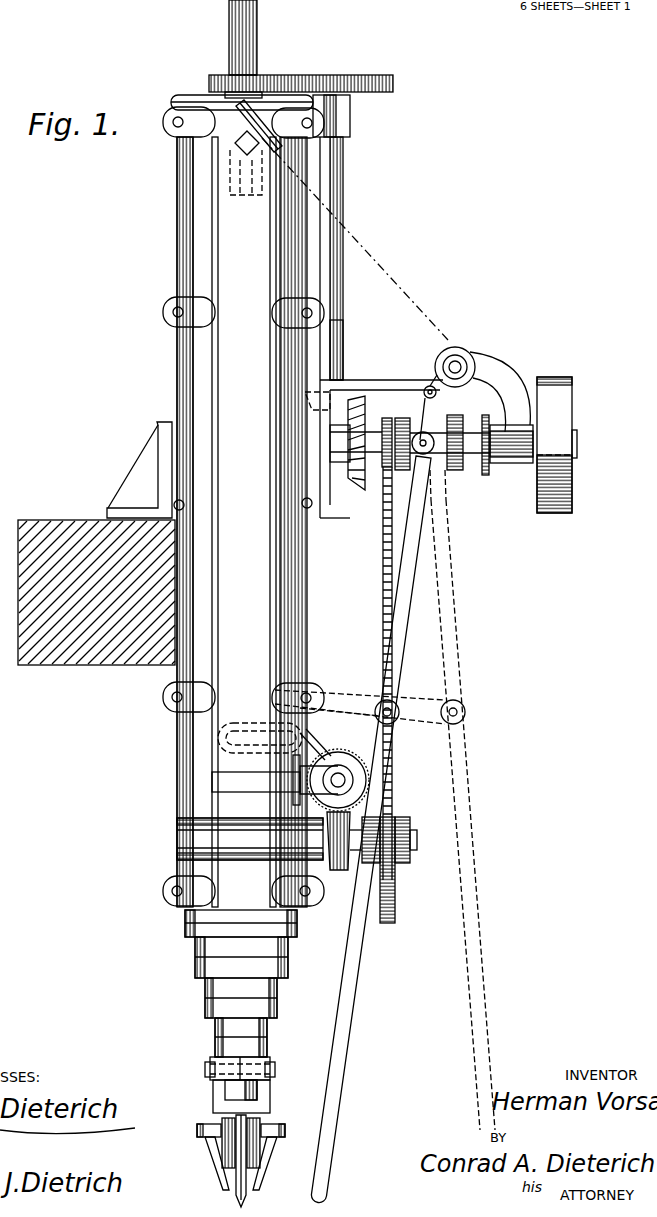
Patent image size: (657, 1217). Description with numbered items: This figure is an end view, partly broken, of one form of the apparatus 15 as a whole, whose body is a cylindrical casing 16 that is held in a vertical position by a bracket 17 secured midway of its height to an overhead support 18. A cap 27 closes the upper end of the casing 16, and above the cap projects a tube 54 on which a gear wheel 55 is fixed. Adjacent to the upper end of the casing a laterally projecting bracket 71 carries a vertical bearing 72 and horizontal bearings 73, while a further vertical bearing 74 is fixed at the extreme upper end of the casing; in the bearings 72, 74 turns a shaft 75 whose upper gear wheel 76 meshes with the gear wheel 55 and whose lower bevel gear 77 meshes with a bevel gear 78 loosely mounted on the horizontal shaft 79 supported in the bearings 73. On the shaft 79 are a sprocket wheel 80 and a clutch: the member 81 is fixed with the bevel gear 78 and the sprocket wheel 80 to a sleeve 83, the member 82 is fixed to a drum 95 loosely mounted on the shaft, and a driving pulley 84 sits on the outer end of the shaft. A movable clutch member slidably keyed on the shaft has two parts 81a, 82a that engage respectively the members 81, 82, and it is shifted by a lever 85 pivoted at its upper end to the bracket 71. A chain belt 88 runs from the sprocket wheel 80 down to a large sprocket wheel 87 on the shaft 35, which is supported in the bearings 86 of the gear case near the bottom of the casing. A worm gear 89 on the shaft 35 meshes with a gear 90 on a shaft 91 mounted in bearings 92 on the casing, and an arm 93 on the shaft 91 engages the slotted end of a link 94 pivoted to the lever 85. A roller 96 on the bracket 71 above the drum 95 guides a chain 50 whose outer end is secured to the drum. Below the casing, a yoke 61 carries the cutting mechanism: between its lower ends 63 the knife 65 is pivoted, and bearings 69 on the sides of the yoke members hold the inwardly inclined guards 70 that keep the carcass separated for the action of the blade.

The apparatus 15 is at (218, 578).
The cylindrical casing 16 is at (183, 366).
The bracket 17 is at (138, 464).
The overhead support 18 is at (22, 598).
The cap 27 is at (183, 82).
The shaft 35 is at (418, 833).
The chain 50 is at (392, 278).
The tube 54 is at (257, 40).
The gear wheel 55 is at (212, 75).
The yoke 61 is at (262, 1068).
The lower ends of the yoke 63 is at (213, 1094).
The knife 65 is at (248, 1198).
The bearings 69 is at (205, 1124).
The inwardly inclined guards 70 is at (216, 1160).
The laterally projecting bracket 71 is at (376, 350).
The vertical bearing 72 is at (340, 330).
The horizontal bearings 73 is at (330, 440).
The vertical bearing 74 is at (350, 126).
The shaft 75 is at (343, 191).
The gear wheel 76 is at (372, 78).
The bevel gear 77 is at (312, 394).
The bevel gear 78 is at (366, 420).
The horizontal shaft 79 is at (578, 441).
The sprocket wheel 80 is at (390, 415).
The clutch member 81 is at (404, 472).
The movable clutch member part 81a is at (425, 460).
The clutch member 82 is at (455, 472).
The movable clutch member part 82a is at (452, 475).
The sleeve 83 is at (418, 413).
The driving pulley 84 is at (551, 376).
The lever 85 is at (400, 627).
The bearings 86 is at (0, 836).
The large sprocket wheel 87 is at (396, 889).
The chain belt 88 is at (382, 604).
The worm gear 89 is at (342, 870).
The gear 90 is at (370, 774).
The shaft 91 is at (352, 792).
The bearings 92 is at (335, 762).
The arm 93 is at (275, 710).
The link 94 is at (342, 708).
The drum 95 is at (480, 470).
The roller 96 is at (463, 350).